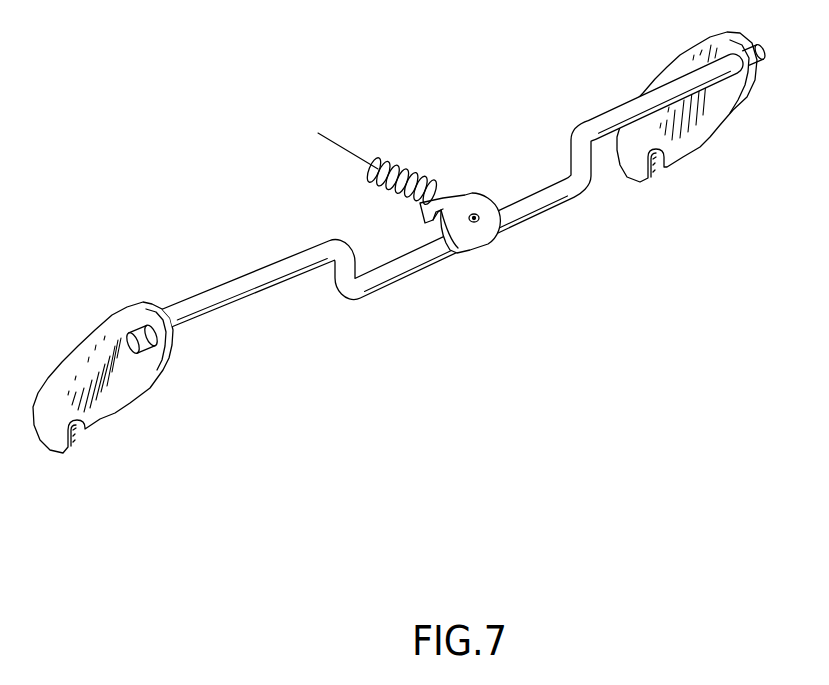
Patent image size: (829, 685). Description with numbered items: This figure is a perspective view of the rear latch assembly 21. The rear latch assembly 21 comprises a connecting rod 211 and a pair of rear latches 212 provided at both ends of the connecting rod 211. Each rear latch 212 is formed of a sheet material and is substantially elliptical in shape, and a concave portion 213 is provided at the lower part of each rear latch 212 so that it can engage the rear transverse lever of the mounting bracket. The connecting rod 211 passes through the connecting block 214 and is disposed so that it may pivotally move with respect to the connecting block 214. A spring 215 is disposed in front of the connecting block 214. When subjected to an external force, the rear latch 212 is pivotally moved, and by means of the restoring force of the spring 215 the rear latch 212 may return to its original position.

The rear latch assembly 21 is at (408, 265).
The connecting rod 211 is at (383, 288).
The rear latch 212 is at (712, 115).
The concave portion 213 is at (657, 155).
The connecting block 214 is at (482, 238).
The spring 215 is at (400, 167).